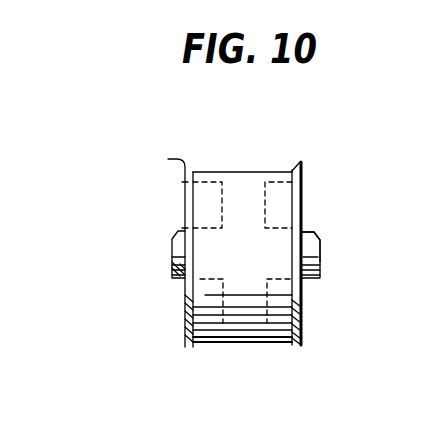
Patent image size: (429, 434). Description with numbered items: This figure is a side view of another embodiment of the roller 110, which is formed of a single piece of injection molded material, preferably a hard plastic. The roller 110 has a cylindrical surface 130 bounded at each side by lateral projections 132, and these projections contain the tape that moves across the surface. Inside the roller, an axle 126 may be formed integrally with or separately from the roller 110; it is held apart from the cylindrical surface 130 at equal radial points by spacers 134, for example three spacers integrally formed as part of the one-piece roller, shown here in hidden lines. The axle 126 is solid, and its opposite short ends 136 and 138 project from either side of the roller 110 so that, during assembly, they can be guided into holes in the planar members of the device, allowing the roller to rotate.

The roller 110 is at (372, 127).
The axle 126 is at (306, 232).
The cylindrical surface 130 is at (242, 172).
The lateral projections 132 is at (168, 159).
The spacers 134 is at (205, 199).
The short end of axle 136 is at (172, 276).
The short end of axle 138 is at (318, 278).